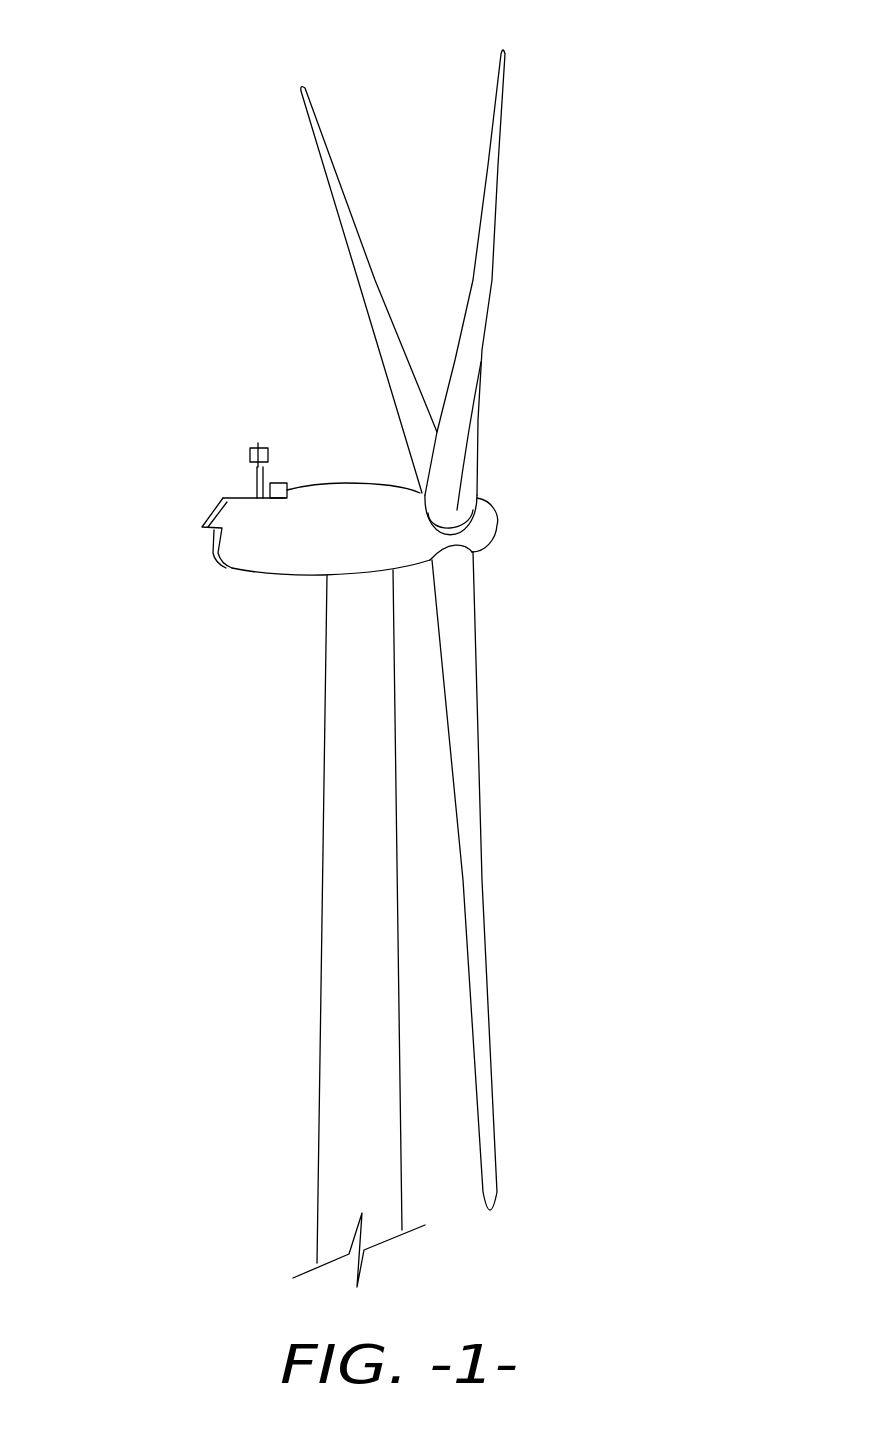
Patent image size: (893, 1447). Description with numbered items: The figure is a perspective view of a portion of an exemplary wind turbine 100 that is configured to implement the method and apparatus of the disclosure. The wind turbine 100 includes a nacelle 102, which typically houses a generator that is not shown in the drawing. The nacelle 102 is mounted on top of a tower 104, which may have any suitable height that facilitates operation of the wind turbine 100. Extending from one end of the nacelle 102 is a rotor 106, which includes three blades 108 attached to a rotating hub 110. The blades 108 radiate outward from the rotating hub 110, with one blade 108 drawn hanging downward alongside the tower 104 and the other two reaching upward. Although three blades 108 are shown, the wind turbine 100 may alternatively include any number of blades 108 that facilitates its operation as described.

The wind turbine 100 is at (170, 224).
The nacelle 102 is at (278, 573).
The tower 104 is at (320, 1000).
The rotor 106 is at (628, 387).
The blades 108 is at (368, 253).
The rotating hub 110 is at (497, 520).